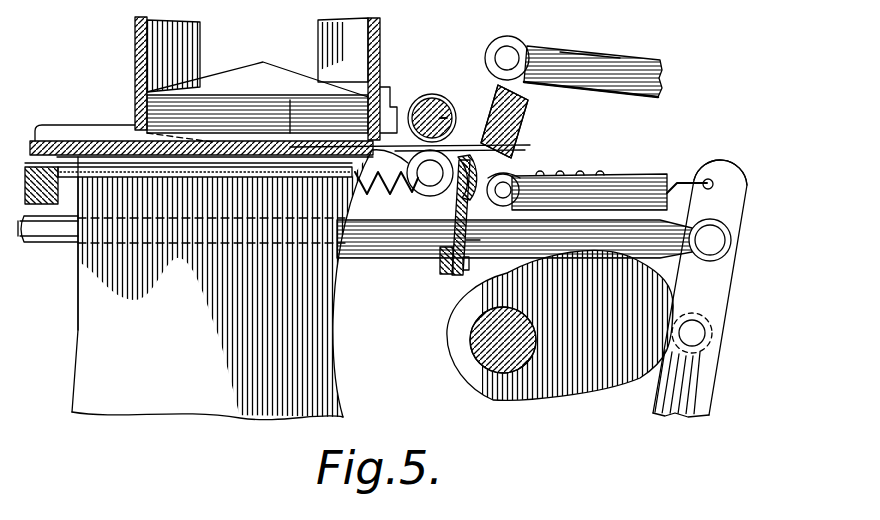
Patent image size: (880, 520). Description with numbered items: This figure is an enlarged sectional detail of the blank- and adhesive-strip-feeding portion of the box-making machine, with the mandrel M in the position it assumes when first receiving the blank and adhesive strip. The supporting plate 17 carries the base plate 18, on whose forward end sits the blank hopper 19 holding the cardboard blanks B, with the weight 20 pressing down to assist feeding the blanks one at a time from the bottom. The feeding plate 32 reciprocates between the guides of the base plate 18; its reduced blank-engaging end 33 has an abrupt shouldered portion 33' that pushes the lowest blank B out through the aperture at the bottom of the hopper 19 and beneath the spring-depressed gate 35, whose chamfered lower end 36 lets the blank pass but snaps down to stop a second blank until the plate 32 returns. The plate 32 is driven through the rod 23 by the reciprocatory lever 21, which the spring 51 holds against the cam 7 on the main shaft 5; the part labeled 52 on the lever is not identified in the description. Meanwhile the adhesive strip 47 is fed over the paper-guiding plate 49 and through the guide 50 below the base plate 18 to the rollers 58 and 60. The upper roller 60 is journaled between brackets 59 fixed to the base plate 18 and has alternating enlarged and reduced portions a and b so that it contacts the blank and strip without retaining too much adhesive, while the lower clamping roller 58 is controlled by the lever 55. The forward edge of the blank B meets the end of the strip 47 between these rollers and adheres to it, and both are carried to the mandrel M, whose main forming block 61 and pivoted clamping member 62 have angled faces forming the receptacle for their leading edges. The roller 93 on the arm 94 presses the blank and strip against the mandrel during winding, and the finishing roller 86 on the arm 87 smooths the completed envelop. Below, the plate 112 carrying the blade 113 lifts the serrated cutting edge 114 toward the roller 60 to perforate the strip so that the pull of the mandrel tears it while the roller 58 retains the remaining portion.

The blank hopper 19 is at (135, 33).
The weight 20 is at (205, 82).
The blank B is at (225, 110).
The abrupt shouldered portion 33' is at (285, 84).
The blank-and-adhesive-strip-feeding plate 32 is at (85, 135).
The base plate 18 is at (38, 143).
The paper-guiding plate 49 is at (55, 205).
The supporting plate 17 is at (222, 285).
The reduced paper-blank-engaging end 33 is at (205, 227).
The guide 50 is at (140, 178).
The chamfered lower end 36 is at (368, 137).
The spring-depressed gate 35 is at (381, 30).
The brackets 59 is at (395, 108).
The upper roller 60 is at (435, 100).
The reduced portions b is at (437, 103).
The enlarged portions a is at (448, 110).
The cutting edge 114 is at (461, 156).
The main forming block 61 is at (527, 112).
The finishing roller 86 is at (515, 50).
The arm 87 is at (640, 62).
The mandrel M is at (575, 50).
The flat-engaging-and-clamping member 62 is at (514, 158).
The lever or arm 94 is at (615, 173).
The roller 93 is at (520, 172).
The reciprocatory lever or arm 21 is at (717, 312).
The pivot pin 52 is at (712, 172).
The lever or arm 55 is at (640, 243).
The cam 7 is at (593, 377).
The shaft 5 is at (480, 353).
The spring 51 is at (386, 195).
The lower clamping roller 58 is at (430, 196).
The adhesive strip 47 is at (395, 200).
The plate 112 is at (455, 270).
The rod 23 is at (400, 240).
The blade 113 is at (470, 245).